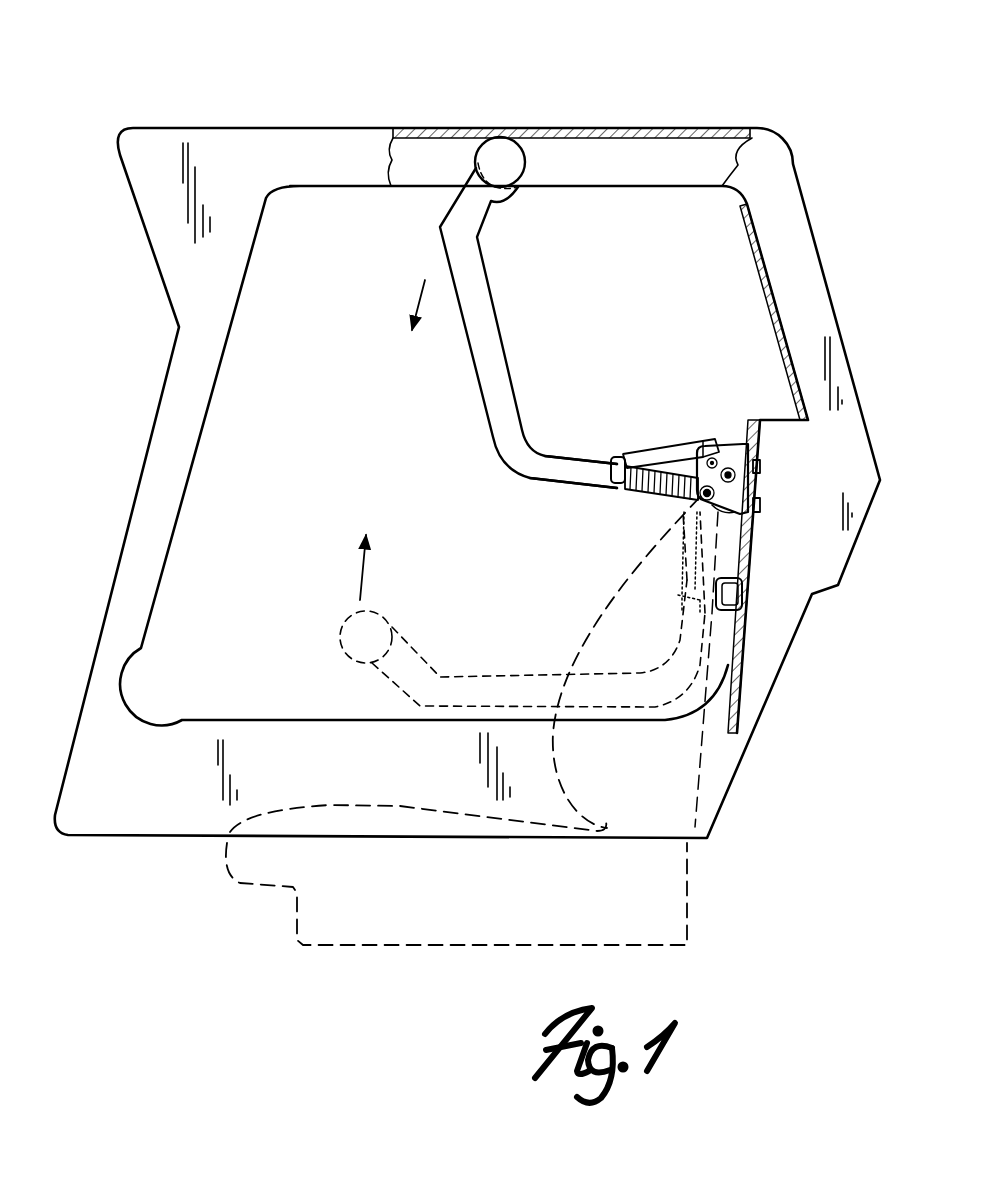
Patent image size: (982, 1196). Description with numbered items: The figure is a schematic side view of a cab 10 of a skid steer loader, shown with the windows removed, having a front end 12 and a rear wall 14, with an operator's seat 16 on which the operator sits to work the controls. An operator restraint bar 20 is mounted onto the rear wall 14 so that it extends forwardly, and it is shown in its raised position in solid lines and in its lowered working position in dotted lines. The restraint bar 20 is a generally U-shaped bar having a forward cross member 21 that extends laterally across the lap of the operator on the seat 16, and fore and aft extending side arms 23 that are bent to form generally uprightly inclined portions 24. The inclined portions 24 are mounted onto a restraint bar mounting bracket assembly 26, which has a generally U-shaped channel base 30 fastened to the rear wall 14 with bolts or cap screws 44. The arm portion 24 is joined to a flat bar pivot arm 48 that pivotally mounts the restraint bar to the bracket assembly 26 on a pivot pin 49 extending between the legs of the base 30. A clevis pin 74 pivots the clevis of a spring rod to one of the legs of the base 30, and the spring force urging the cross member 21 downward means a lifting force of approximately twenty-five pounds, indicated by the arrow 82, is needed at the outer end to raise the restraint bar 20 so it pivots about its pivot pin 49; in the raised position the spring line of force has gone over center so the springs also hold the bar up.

The cab 10 is at (652, 125).
The front end 12 is at (158, 393).
The rear wall 14 is at (783, 313).
The operator's seat 16 is at (630, 561).
The operator restraint bar 20 is at (526, 326).
The forward cross member 21 is at (497, 208).
The side arms 23 is at (476, 355).
The uprightly inclined portions 24 is at (543, 462).
The restraint bar mounting bracket assembly 26 is at (735, 440).
The U-shaped channel base 30 is at (740, 510).
The bolts or cap screws 44 is at (763, 500).
The flat bar pivot arm 48 is at (587, 487).
The pivot pin 49 is at (712, 444).
The clevis pin 74 is at (684, 506).
The arrow 82 is at (368, 575).